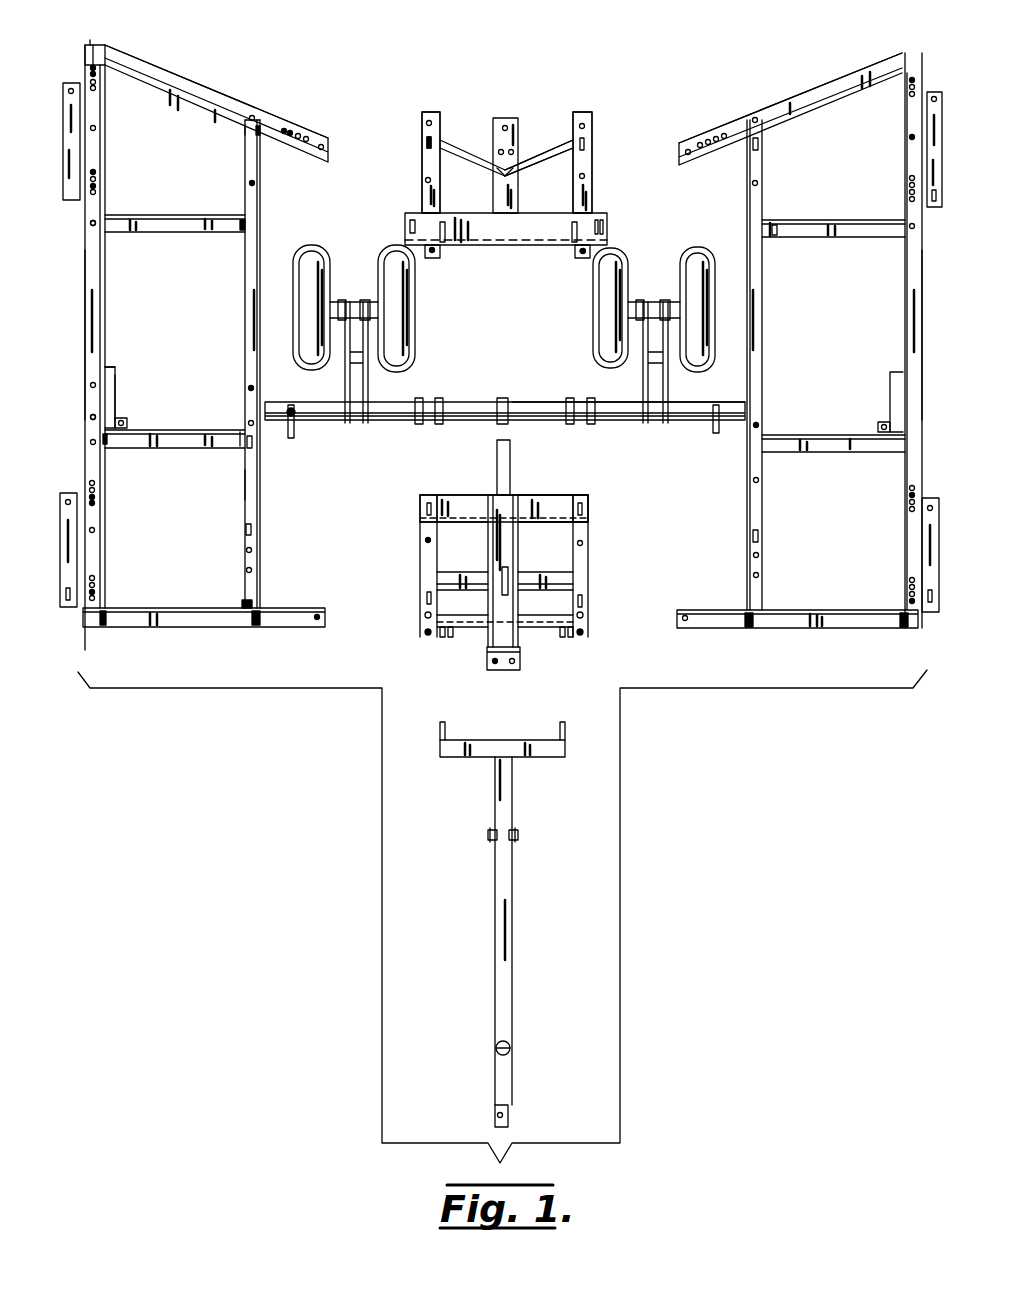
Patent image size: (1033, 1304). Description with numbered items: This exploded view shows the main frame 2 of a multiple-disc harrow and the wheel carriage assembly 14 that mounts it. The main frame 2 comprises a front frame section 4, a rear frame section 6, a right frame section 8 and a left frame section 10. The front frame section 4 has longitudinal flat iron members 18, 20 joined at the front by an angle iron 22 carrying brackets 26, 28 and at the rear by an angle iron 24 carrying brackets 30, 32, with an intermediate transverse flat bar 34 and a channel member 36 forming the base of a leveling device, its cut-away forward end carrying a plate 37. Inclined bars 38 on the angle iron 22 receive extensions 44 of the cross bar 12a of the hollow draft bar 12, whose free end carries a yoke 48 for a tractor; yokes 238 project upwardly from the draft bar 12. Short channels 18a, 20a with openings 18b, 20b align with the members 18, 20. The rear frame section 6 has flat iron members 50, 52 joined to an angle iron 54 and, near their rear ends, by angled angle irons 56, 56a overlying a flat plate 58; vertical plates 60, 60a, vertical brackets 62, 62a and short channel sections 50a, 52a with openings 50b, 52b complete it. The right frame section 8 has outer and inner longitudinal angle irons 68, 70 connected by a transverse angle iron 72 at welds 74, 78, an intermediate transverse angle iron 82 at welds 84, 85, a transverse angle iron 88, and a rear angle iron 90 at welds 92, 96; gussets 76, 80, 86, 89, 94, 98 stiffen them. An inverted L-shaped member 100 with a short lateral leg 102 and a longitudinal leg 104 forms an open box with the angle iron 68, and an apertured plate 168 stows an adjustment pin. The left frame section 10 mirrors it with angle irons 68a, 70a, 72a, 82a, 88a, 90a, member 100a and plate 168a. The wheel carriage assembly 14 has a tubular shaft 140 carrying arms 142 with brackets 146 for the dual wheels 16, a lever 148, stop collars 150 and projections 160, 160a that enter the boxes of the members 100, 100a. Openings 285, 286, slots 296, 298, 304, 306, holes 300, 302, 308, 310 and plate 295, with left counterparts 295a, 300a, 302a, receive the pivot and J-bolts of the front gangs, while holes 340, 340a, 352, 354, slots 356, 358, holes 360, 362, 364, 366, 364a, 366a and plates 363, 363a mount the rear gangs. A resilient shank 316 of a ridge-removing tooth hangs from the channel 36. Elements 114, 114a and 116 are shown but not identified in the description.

The main frame 2 is at (510, 107).
The front frame section 4 is at (412, 564).
The rear frame section 6 is at (600, 184).
The right frame section 8 is at (219, 91).
The left frame section 10 is at (830, 72).
The draft bar 12 is at (497, 906).
The cross bar 12a is at (540, 750).
The wheel carriage assembly 14 is at (461, 394).
The dual wheels 16 is at (395, 272).
The longitudinal flat iron member 18 is at (435, 560).
The short length of channel 18a is at (426, 636).
The opening 18b is at (424, 632).
The longitudinal flat iron member 20 is at (584, 544).
The short length of channel 20a is at (586, 634).
The opening 20b is at (585, 630).
The angle iron 22 is at (528, 624).
The angle iron 24 is at (530, 495).
The bracket 26 is at (447, 600).
The bracket 28 is at (568, 582).
The bracket 30 is at (440, 495).
The bracket 32 is at (573, 495).
The intermediate transverse flat bar 34 is at (538, 572).
The channel member 36 is at (503, 671).
The plate 37 is at (503, 650).
The bars 38 is at (443, 637).
The extensions 44 is at (440, 728).
The yoke 48 is at (510, 1116).
The longitudinal flat iron member 50 is at (422, 164).
The short channel section 50a is at (436, 250).
The opening 50b is at (430, 255).
The longitudinal flat iron member 52 is at (590, 150).
The short channel section 52a is at (578, 258).
The opening 52b is at (584, 258).
The angle iron 54 is at (490, 243).
The angularly disposed angle iron 56 is at (450, 148).
The angularly disposed angle iron 56a is at (540, 145).
The flat plate 58 is at (511, 178).
The vertical plate 60 is at (458, 150).
The vertical plate 60a is at (572, 150).
The vertical bracket 62 is at (443, 222).
The vertical bracket 62a is at (572, 232).
The outer longitudinal angle iron 68 is at (98, 282).
The outer longitudinal angle iron 68a is at (910, 292).
The inner longitudinal angle iron 70 is at (248, 288).
The inner longitudinal angle iron 70a is at (764, 278).
The transverse angle iron 72 is at (178, 628).
The transverse angle iron 72a is at (828, 628).
The weld 74 is at (106, 624).
The triangular gusset 76 is at (92, 632).
The weld 78 is at (244, 600).
The triangular gusset 80 is at (250, 626).
The intermediate transverse angle iron 82 is at (190, 436).
The intermediate transverse angle iron 82a is at (815, 436).
The weld 84 is at (105, 440).
The butt weld 85 is at (240, 444).
The gusset 86 is at (90, 428).
The transverse angle iron 88 is at (150, 222).
The transverse angle iron 88a is at (810, 222).
The gusset 89 is at (90, 232).
The angle iron 90 is at (178, 78).
The angle iron 90a is at (875, 66).
The weld 92 is at (107, 48).
The gusset plate 94 is at (92, 44).
The weld 96 is at (244, 132).
The gusset 98 is at (256, 118).
The inverted L-shaped member 100 is at (123, 373).
The inverted L-shaped member 100a is at (878, 374).
The short lateral leg 102 is at (110, 365).
The longitudinal leg 104 is at (117, 382).
The hole 114 is at (317, 622).
The hole 114a is at (686, 622).
The holes 116 is at (492, 672).
The tubular shaft 140 is at (528, 404).
The arms 142 is at (345, 392).
The brackets 146 is at (370, 302).
The lever 148 is at (502, 402).
The stop collars 150 is at (440, 421).
The projection 160 is at (295, 422).
The projection 160a is at (715, 430).
The apertured plate 168 is at (125, 418).
The apertured plate 168a is at (878, 424).
The yokes 238 is at (512, 837).
The opening 285 is at (246, 487).
The opening 286 is at (425, 540).
The apertured flat plate 295 is at (70, 542).
The apertured flat plate 295a is at (930, 530).
The elongated slot 296 is at (246, 528).
The elongated slot 298 is at (426, 596).
The spaced holes 300 is at (96, 596).
The spaced holes 300a is at (904, 604).
The spaced holes 302 is at (96, 498).
The spaced holes 302a is at (904, 505).
The elongated slot 304 is at (253, 442).
The elongated slot 306 is at (424, 505).
The hole 308 is at (96, 484).
The hole 310 is at (95, 528).
The resilient shank 316 is at (497, 457).
The spaced holes 340 is at (306, 136).
The holes 340a is at (720, 128).
The hole 352 is at (260, 134).
The hole 354 is at (426, 136).
The slot 356 is at (242, 218).
The slot 358 is at (410, 226).
The spaced holes 360 is at (100, 178).
The spaced holes 362 is at (97, 78).
The apertured flat plate 363 is at (72, 138).
The apertured flat plate 363a is at (935, 153).
The holes 364 is at (100, 228).
The holes 364a is at (905, 222).
The holes 366 is at (97, 127).
The holes 366a is at (910, 134).